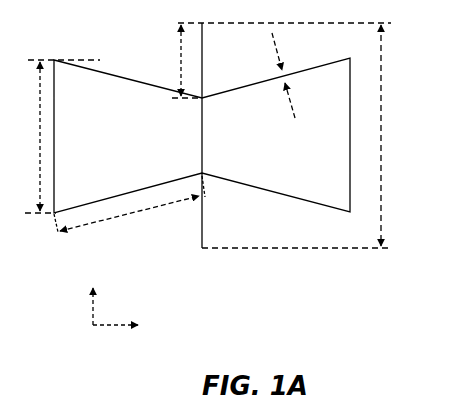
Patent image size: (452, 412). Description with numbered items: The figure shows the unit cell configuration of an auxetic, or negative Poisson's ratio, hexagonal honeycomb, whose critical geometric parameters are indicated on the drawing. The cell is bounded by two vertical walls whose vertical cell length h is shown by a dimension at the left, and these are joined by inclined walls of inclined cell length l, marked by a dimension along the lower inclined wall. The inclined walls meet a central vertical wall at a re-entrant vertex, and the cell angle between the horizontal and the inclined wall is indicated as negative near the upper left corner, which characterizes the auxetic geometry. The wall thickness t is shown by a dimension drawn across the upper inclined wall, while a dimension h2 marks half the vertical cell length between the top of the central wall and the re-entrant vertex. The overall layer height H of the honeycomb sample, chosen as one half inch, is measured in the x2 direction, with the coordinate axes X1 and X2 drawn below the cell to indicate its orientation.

The layer height H is at (392, 135).
The vertical cell length h is at (28, 136).
The half height h/2 h2 is at (162, 60).
The wall thickness t is at (283, 75).
The inclined cell length l is at (129, 208).
The x1 direction X1 is at (129, 327).
The x2 direction X2 is at (94, 290).